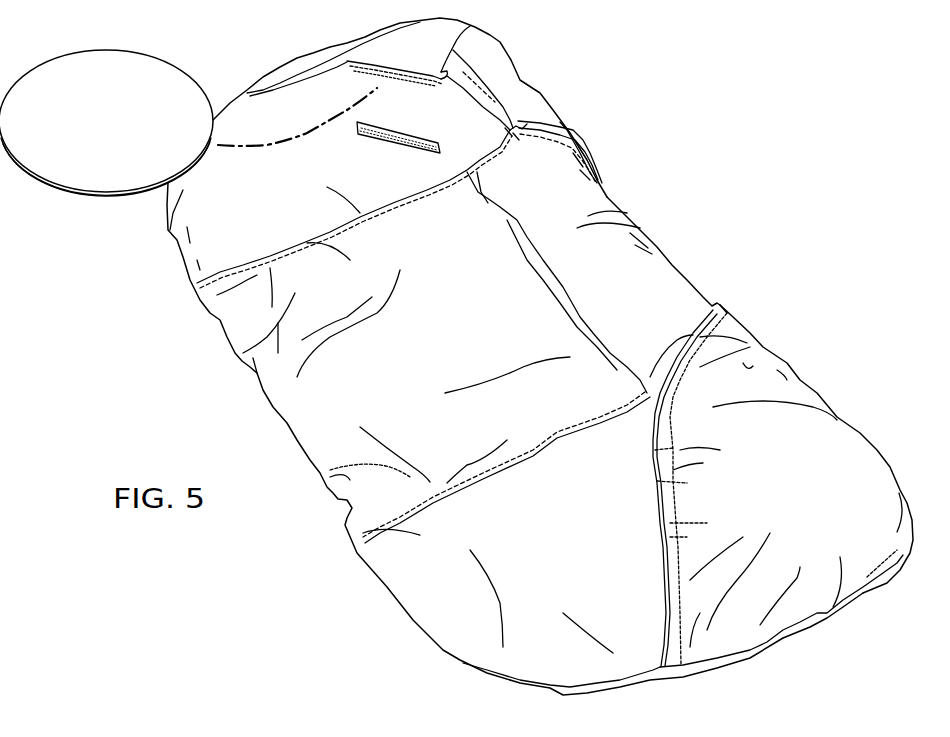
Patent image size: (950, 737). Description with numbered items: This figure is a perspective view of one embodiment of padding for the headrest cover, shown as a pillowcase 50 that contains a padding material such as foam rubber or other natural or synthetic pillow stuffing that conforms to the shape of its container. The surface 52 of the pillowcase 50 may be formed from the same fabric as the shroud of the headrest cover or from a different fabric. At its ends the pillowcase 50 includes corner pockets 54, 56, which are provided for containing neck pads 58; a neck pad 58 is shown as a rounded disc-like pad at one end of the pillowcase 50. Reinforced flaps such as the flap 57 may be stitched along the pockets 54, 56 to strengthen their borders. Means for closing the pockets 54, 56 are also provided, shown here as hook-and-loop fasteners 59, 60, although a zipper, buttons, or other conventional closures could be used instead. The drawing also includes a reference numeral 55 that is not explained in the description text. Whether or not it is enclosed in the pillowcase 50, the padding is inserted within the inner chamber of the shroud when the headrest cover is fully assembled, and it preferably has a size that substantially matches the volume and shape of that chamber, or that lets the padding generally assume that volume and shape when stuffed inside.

The pillowcase 50 is at (632, 95).
The surface 52 is at (470, 292).
The corner pocket 54 is at (500, 42).
The drawstring / cord 55 is at (512, 124).
The corner pocket 56 is at (866, 457).
The reinforced flap 57 is at (657, 513).
The neck pad 58 is at (63, 57).
The hook-and-loop fastener 59 is at (383, 143).
The hook-and-loop fastener 60 is at (414, 80).